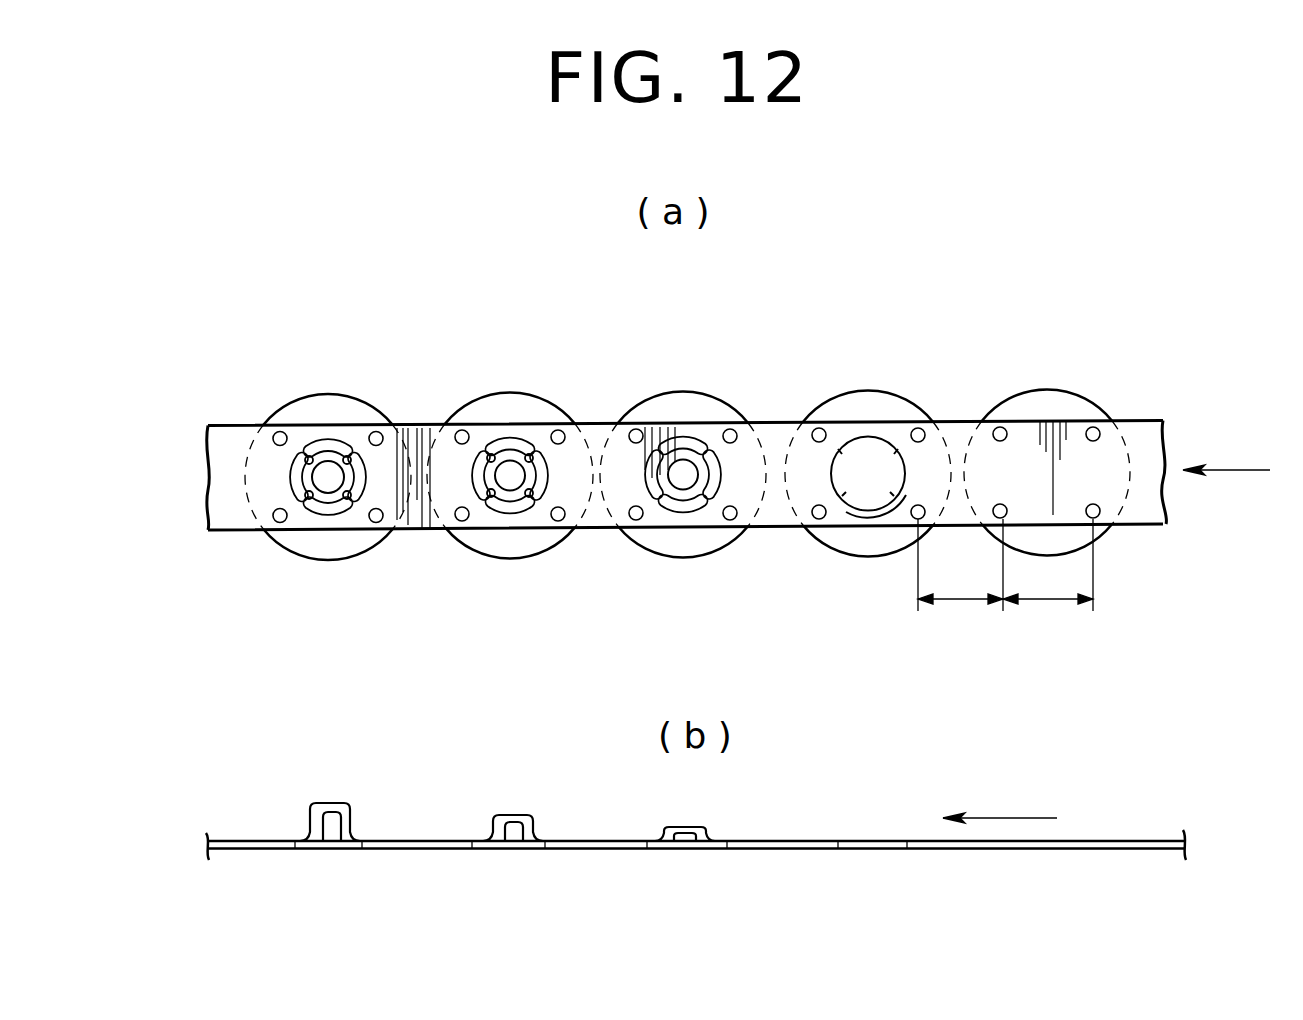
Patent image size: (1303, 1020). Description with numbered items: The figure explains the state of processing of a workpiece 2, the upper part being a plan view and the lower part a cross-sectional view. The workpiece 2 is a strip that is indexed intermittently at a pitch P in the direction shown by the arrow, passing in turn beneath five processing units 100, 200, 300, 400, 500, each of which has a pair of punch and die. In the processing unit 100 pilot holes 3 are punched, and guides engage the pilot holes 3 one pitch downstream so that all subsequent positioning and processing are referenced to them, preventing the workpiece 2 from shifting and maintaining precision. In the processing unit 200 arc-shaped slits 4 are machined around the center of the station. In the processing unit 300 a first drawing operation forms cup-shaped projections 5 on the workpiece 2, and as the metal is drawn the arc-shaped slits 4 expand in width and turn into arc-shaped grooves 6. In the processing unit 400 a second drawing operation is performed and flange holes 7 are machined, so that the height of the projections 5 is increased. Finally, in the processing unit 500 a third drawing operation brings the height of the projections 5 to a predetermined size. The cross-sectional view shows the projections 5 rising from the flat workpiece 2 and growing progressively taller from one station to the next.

The workpiece 2 is at (1138, 432).
The pilot holes 3 is at (1097, 514).
The arc-shaped slits 4 is at (839, 521).
The cup-shaped projections 5 is at (348, 804).
The arc-shaped grooves 6 is at (672, 514).
The flange holes 7 is at (500, 497).
The processing unit 100 is at (1058, 384).
The processing unit 200 is at (870, 385).
The processing unit 300 is at (694, 388).
The processing unit 400 is at (517, 387).
The processing unit 500 is at (334, 384).